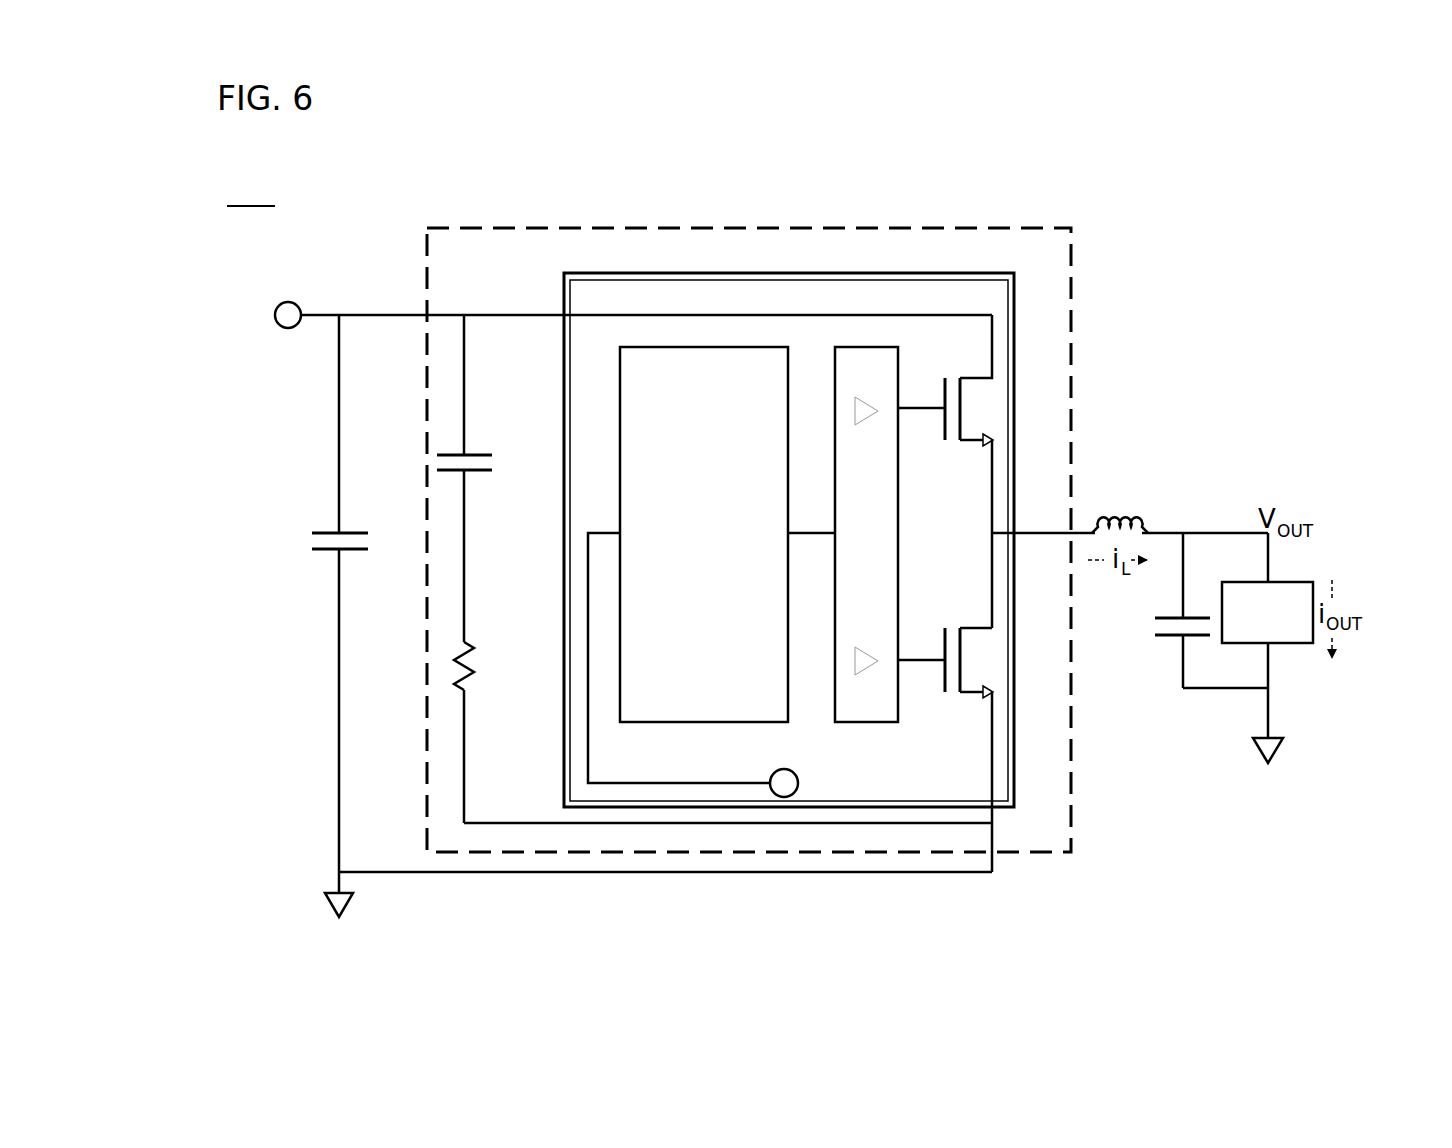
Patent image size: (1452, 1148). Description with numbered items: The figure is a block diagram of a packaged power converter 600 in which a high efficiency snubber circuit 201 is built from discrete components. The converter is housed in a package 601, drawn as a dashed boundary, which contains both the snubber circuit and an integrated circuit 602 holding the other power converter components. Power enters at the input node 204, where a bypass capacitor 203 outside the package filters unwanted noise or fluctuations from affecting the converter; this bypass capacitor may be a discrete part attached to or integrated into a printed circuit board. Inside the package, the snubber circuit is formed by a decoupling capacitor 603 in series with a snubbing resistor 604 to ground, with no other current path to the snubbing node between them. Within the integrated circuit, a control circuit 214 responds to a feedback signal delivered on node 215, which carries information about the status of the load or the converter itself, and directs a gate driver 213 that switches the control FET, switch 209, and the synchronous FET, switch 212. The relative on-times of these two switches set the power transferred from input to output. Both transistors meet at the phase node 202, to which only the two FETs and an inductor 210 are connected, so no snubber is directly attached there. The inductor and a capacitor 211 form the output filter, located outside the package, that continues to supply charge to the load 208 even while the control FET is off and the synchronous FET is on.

The power converter 600 is at (253, 192).
The package 601 is at (1065, 256).
The integrated circuit 602 is at (623, 307).
The snubber circuit 201 is at (465, 303).
The phase node 202 is at (986, 553).
The bypass capacitor 203 is at (317, 559).
The input node 204 is at (305, 301).
The load 208 is at (1290, 627).
The switch 209 is at (941, 368).
The inductor 210 is at (1143, 519).
The capacitor 211 is at (1149, 656).
The switch 212 is at (951, 704).
The gate driver 213 is at (892, 547).
The control circuit 214 is at (731, 549).
The node 215 is at (801, 771).
The decoupling capacitor 603 is at (481, 441).
The snubbing resistor 604 is at (482, 690).